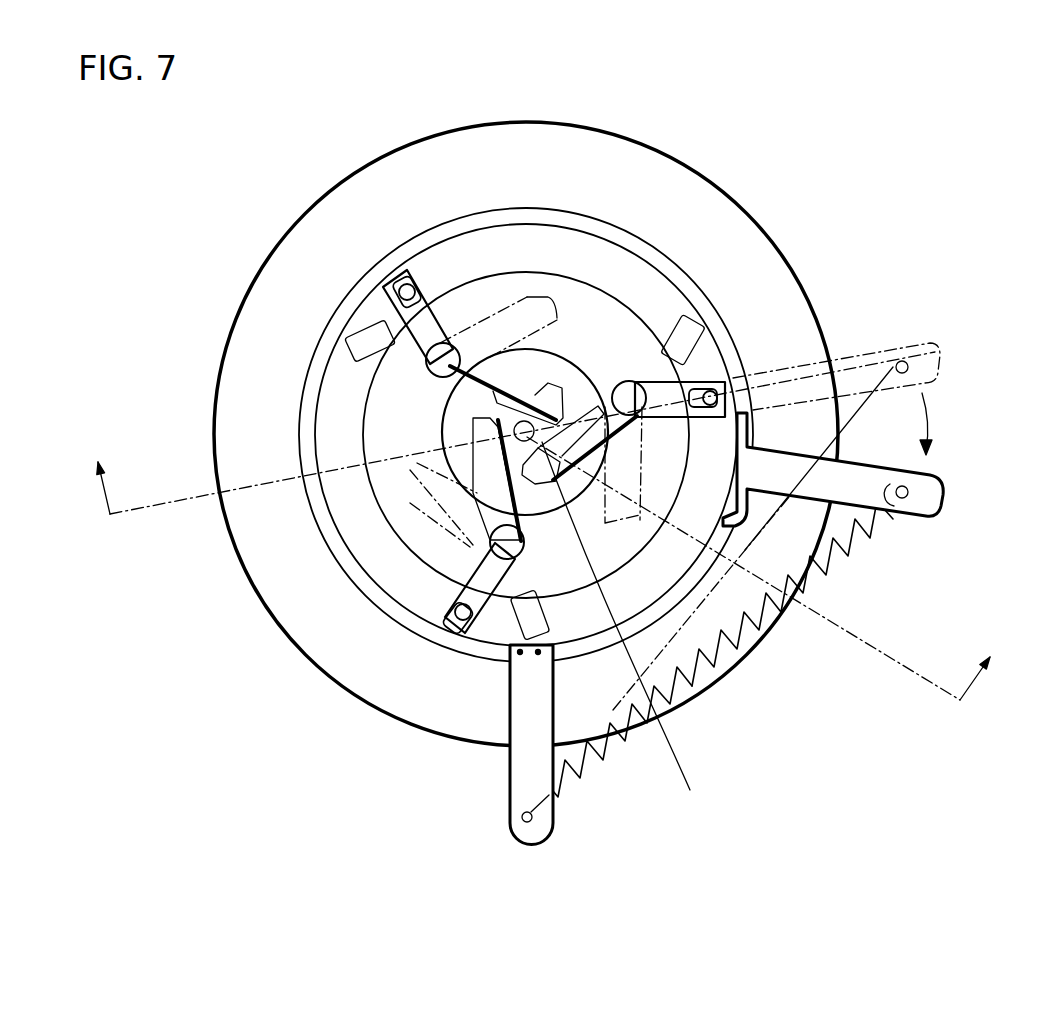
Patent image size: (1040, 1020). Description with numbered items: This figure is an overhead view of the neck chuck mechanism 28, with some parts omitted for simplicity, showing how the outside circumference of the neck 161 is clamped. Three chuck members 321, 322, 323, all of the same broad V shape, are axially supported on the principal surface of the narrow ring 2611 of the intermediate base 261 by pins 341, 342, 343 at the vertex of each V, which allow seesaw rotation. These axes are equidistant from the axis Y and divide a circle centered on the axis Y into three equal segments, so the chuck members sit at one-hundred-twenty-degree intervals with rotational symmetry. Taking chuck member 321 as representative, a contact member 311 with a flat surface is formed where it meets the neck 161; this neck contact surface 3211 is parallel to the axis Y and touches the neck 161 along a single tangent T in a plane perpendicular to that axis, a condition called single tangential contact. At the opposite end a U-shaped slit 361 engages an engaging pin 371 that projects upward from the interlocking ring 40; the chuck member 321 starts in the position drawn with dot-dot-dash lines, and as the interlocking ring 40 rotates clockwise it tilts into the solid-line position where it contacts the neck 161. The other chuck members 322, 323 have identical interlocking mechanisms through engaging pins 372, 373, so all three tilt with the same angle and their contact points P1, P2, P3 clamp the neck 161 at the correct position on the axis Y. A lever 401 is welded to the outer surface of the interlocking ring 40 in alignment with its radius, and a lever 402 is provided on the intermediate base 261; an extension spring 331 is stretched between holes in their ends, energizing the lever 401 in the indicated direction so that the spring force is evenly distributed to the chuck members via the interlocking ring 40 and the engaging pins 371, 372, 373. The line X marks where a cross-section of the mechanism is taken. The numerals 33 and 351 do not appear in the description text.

The neck chuck mechanism 28 is at (288, 416).
The rotating arm 33 is at (952, 537).
The interlocking ring 40 is at (640, 275).
The neck 161 is at (528, 405).
The intermediate base 261 is at (745, 202).
The narrow ring 2611 is at (640, 305).
The contact member 311 is at (622, 330).
The chuck member 321 is at (550, 395).
The neck contact surface 3211 is at (462, 432).
The chuck member 322 is at (600, 452).
The chuck member 323 is at (478, 445).
The extension spring 331 is at (585, 758).
The pin 341 is at (405, 312).
The pin 342 is at (735, 520).
The pin 343 is at (488, 580).
The roller 351 is at (440, 350).
The U-shaped slit 361 is at (430, 327).
The engaging pin 371 is at (397, 274).
The engaging pin 372 is at (740, 353).
The engaging pin 373 is at (460, 620).
The lever 401 is at (930, 490).
The lever 402 is at (520, 793).
The contact point P1 is at (543, 390).
The contact point P2 is at (580, 475).
The contact point P3 is at (395, 388).
The tangent T is at (762, 632).
The line X— X is at (552, 531).
The axis Y is at (625, 631).